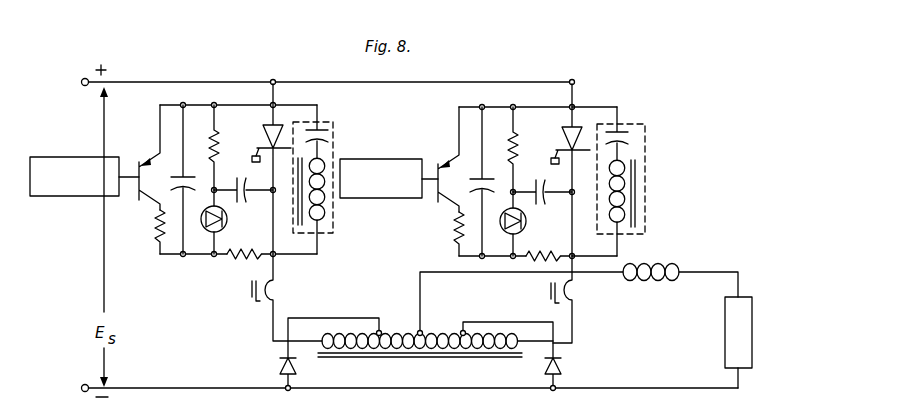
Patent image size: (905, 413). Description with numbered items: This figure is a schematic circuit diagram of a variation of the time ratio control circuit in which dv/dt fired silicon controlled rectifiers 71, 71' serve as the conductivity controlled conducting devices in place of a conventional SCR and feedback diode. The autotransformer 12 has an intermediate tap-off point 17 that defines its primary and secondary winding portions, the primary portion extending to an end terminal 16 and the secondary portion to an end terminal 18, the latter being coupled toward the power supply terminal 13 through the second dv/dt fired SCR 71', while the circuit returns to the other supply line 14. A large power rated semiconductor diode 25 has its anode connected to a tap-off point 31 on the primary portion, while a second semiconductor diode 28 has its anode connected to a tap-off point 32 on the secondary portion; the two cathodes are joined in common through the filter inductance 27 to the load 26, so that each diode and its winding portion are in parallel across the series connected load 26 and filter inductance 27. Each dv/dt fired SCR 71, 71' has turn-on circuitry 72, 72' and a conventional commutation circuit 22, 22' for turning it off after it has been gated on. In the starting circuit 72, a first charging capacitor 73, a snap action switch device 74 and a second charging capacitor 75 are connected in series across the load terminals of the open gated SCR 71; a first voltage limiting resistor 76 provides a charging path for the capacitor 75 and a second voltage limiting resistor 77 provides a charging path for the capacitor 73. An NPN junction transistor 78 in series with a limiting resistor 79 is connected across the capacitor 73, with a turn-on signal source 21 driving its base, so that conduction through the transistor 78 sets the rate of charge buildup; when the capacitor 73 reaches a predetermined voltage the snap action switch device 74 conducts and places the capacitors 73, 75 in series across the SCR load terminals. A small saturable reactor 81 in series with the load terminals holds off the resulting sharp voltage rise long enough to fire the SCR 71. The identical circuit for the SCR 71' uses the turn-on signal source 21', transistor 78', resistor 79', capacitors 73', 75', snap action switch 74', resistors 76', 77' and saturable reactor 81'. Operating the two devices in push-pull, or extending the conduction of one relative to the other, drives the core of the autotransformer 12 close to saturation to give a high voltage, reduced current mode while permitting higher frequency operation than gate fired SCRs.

The autotransformer 12 is at (437, 379).
The power supply terminal 13 is at (144, 82).
The negative supply bus 14 is at (154, 388).
The end terminal 16 is at (322, 351).
The intermediate tap-off point 17 is at (422, 328).
The end terminal 18 is at (520, 351).
The turn-on signal source 21 is at (84, 190).
The turn-on signal source 21' is at (389, 192).
The commutation circuit 22 is at (324, 180).
The commutation circuit 22' is at (636, 181).
The semiconductor diode 25 is at (562, 367).
The load 26 is at (725, 350).
The filter inductance 27 is at (655, 281).
The semiconductor diode 28 is at (278, 367).
The tap-off point 31 is at (463, 328).
The tap-off point 32 is at (381, 327).
The dv/dt fired silicon controlled rectifier 71 is at (276, 167).
The dv/dt fired silicon controlled rectifier 71' is at (569, 168).
The starting circuit 72 is at (237, 117).
The starting circuit 72' is at (534, 119).
The first charging capacitor 73 is at (179, 179).
The first charging capacitor 73' is at (478, 181).
The snap action switch device 74 is at (229, 222).
The snap action switch device 74' is at (530, 224).
The second charging capacitor 75 is at (243, 177).
The second charging capacitor 75' is at (542, 179).
The first voltage limiting resistor 76 is at (228, 147).
The first voltage limiting resistor 76' is at (503, 149).
The second voltage limiting resistor 77 is at (242, 269).
The second voltage limiting resistor 77' is at (538, 271).
The NPN junction transistor 78 is at (137, 165).
The NPN junction transistor 78' is at (436, 167).
The limiting resistor 79 is at (144, 232).
The limiting resistor 79' is at (443, 234).
The saturable reactor 81 is at (287, 297).
The saturable reactor 81' is at (579, 299).